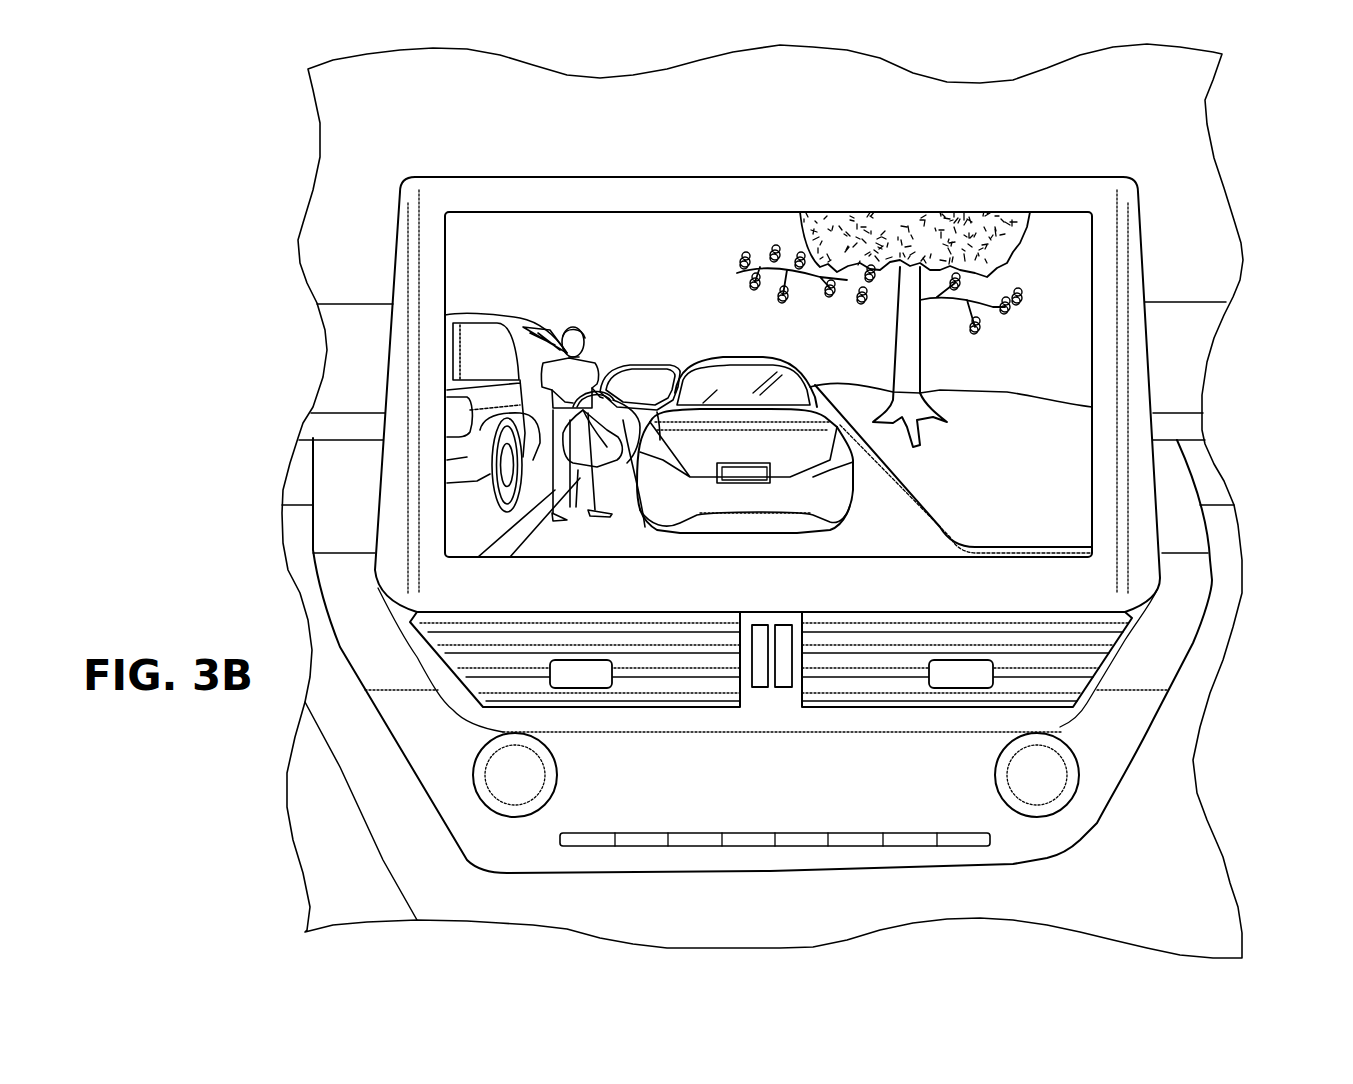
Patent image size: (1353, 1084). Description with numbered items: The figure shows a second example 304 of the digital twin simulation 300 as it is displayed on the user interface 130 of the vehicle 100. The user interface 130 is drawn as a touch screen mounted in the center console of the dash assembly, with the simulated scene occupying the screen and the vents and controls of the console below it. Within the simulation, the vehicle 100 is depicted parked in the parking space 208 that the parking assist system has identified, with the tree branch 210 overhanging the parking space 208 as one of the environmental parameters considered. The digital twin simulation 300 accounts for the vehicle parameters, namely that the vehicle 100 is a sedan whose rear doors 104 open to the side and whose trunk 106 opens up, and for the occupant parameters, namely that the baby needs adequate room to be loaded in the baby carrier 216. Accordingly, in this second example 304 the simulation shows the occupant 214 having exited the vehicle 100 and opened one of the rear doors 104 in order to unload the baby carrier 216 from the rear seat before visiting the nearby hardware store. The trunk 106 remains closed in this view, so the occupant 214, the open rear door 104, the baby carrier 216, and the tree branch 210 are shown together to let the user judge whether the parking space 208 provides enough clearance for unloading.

The vehicle 100 is at (766, 484).
The rear doors 104 is at (637, 363).
The trunk 106 is at (787, 458).
The user interface 130 is at (1140, 205).
The parking space 208 is at (690, 538).
The tree branch 210 is at (757, 263).
The occupant 214 is at (575, 328).
The baby carrier 216 is at (612, 465).
The digital twin simulation 300 is at (1092, 222).
The second example 304 is at (1092, 278).